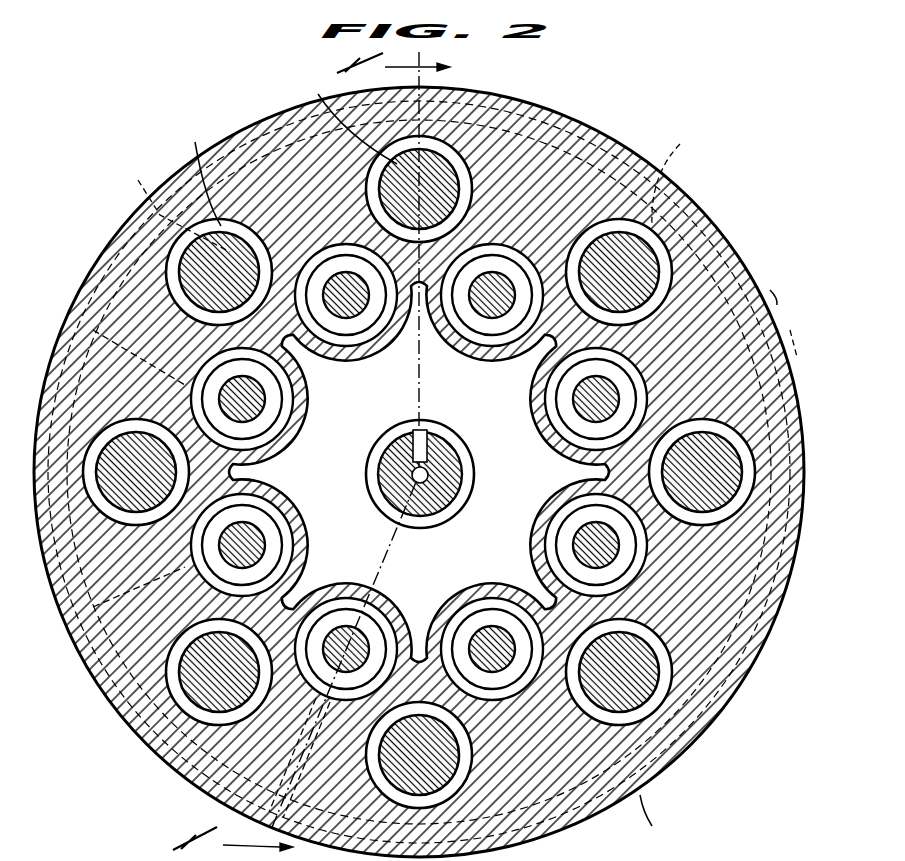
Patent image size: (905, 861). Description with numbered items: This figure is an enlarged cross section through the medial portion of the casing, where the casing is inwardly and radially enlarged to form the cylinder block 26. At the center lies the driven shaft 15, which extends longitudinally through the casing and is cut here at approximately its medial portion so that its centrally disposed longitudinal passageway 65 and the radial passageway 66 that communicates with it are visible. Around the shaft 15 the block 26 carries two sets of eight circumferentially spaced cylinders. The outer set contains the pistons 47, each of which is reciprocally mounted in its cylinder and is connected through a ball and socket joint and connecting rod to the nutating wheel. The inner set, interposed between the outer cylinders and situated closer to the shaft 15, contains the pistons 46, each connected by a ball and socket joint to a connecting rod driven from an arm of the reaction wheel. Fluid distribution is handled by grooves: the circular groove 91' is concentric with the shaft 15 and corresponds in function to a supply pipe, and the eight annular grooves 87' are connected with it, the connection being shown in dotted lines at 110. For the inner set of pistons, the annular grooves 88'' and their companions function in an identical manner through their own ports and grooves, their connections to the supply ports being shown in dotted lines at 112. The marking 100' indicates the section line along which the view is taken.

The piston 47 is at (463, 147).
The piston 46 is at (262, 404).
The annular groove 87' is at (488, 455).
The circular groove 91' is at (171, 204).
The dotted-line connection 112 is at (93, 274).
The dotted-line connection 110 is at (732, 244).
The annular groove 88'' is at (413, 427).
The radial passageway 66 is at (430, 440).
The driven shaft 15 is at (460, 463).
The longitudinal passageway 65 is at (432, 524).
The cylinder block 26 is at (419, 472).
The section line 100' is at (206, 854).